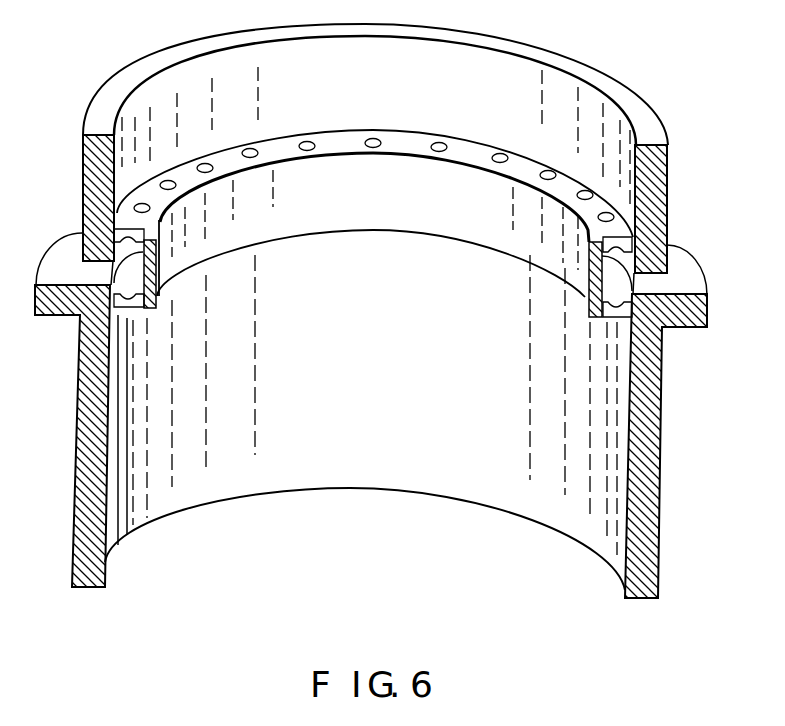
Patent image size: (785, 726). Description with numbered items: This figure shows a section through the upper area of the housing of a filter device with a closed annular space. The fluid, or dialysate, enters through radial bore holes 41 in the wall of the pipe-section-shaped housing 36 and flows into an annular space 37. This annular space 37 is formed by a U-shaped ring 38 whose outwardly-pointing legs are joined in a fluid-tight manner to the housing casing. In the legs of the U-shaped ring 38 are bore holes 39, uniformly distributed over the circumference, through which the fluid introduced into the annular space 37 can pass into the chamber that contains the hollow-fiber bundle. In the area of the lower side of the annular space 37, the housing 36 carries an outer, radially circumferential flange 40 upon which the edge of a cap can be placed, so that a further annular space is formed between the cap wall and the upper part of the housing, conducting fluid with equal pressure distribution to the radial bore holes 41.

The pipe-section-shaped housing 36 is at (657, 458).
The annular space 37 is at (588, 298).
The U-shaped ring 38 is at (357, 215).
The bore holes 39 is at (307, 142).
The flange 40 is at (48, 317).
The radial bore holes 41 is at (85, 273).